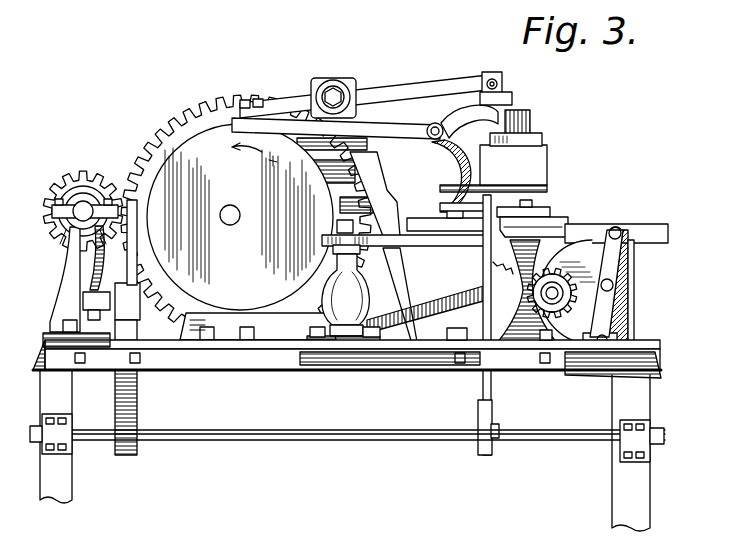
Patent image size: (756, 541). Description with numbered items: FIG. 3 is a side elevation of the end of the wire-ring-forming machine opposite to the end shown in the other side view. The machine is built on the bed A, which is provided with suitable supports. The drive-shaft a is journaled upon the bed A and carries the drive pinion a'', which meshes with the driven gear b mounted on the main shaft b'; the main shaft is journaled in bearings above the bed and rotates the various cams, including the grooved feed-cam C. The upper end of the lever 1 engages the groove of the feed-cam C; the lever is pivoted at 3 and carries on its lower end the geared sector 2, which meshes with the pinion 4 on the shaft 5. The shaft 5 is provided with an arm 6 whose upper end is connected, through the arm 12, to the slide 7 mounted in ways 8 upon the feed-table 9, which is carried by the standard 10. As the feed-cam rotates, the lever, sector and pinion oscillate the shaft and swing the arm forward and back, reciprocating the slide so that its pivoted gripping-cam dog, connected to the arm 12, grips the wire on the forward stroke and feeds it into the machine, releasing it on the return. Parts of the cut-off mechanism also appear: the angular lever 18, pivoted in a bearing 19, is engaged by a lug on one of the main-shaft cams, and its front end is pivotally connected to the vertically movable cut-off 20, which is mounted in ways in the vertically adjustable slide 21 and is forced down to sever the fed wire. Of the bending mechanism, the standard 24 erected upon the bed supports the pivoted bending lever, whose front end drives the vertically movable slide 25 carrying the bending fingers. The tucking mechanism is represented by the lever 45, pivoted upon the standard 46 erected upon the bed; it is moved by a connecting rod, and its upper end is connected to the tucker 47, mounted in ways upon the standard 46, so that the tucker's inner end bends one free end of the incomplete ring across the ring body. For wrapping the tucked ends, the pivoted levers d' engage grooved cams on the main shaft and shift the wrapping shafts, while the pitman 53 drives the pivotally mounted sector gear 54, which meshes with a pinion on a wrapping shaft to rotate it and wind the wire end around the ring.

The lever 1 is at (87, 267).
The geared sector 2 is at (133, 306).
The pivot 3 is at (113, 305).
The pinion 4 is at (126, 426).
The shaft 5 is at (347, 436).
The arm 6 is at (479, 325).
The slide 7 is at (560, 220).
The ways 8 is at (575, 222).
The feed-table 9 is at (560, 292).
The standard 10 is at (537, 330).
The arm 12 is at (547, 214).
The angular lever 18 is at (337, 129).
The bearing 19 is at (469, 136).
The cut-off 20 is at (529, 123).
The vertically adjustable slide 21 is at (529, 142).
The standard 24 is at (371, 95).
The vertically movable slide 25 is at (512, 104).
The lever 45 is at (633, 309).
The standard 46 is at (642, 293).
The tucker 47 is at (618, 227).
The pitman 53 is at (330, 296).
The sector gear 54 is at (556, 302).
The drive-shaft a is at (85, 211).
The drive pinion a'' is at (82, 203).
The driven gear b is at (246, 220).
The main shaft b' is at (230, 215).
The feed-cam C is at (240, 217).
The pivoted levers d' is at (406, 239).
The bed A is at (347, 364).